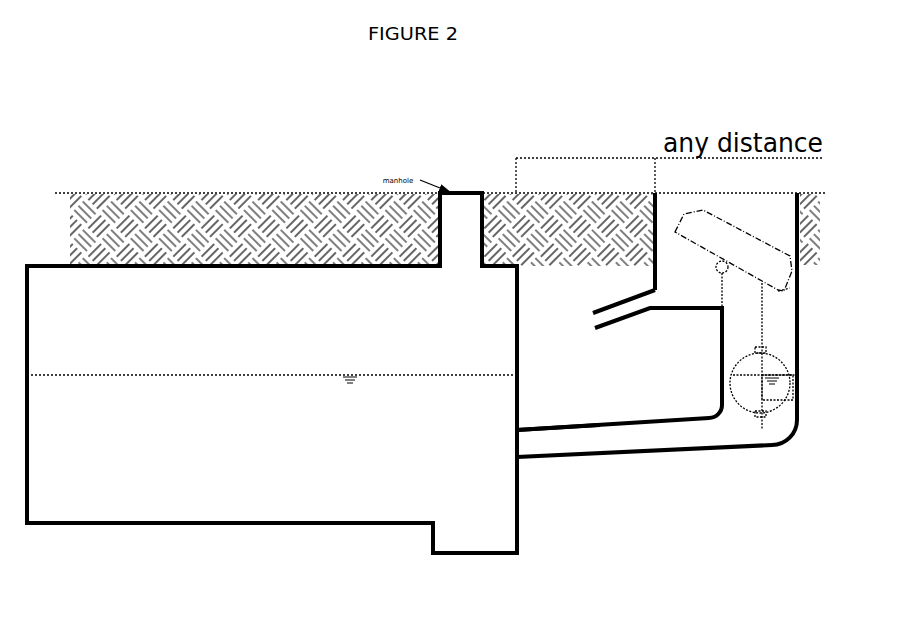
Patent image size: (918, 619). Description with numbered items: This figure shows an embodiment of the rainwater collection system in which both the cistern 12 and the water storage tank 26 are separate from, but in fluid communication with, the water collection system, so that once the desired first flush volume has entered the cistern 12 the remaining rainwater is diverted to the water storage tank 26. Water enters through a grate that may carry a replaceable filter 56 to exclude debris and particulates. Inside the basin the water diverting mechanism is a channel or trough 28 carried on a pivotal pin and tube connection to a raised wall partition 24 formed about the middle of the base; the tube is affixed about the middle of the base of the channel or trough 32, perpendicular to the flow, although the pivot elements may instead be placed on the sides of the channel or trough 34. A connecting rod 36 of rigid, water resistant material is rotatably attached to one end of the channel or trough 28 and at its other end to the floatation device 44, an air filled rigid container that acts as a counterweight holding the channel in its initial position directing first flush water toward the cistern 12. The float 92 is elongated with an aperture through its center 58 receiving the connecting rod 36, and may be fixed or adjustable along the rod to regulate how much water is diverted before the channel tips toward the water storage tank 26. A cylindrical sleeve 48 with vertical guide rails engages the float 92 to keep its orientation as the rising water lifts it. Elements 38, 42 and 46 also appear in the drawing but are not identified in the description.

The cistern 12 is at (272, 373).
The raised wall partition 24 is at (719, 308).
The water storage tank 26 is at (590, 314).
The channel or trough 28 is at (801, 277).
The base of the channel or trough 32 is at (707, 260).
The sides of the channel or trough 34 is at (724, 230).
The connecting rod 36 is at (771, 327).
The seat 38 is at (768, 291).
The float chamber 42 is at (768, 391).
The floatation device 44 is at (753, 448).
The ground surface 46 is at (737, 191).
The cylindrical sleeve 48 is at (719, 351).
The filter 56 is at (510, 439).
The aperture through the center of the float 58 is at (756, 390).
The float 92 is at (772, 399).